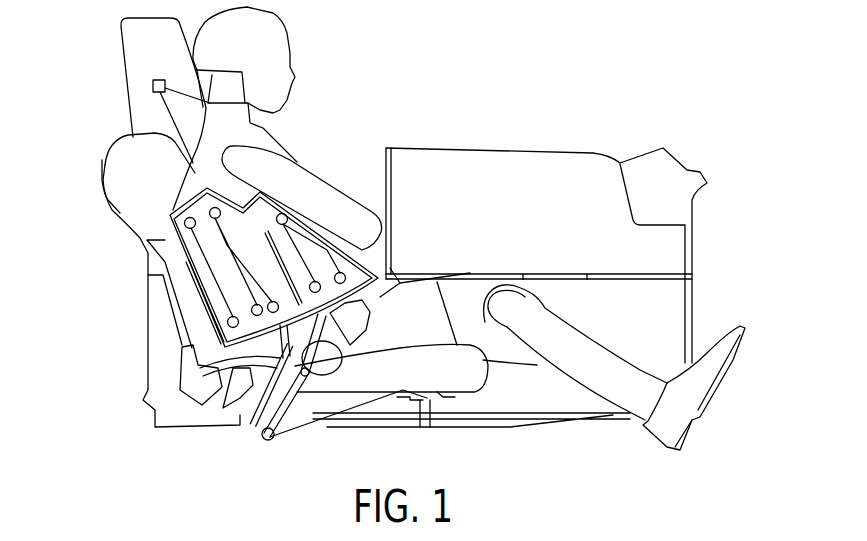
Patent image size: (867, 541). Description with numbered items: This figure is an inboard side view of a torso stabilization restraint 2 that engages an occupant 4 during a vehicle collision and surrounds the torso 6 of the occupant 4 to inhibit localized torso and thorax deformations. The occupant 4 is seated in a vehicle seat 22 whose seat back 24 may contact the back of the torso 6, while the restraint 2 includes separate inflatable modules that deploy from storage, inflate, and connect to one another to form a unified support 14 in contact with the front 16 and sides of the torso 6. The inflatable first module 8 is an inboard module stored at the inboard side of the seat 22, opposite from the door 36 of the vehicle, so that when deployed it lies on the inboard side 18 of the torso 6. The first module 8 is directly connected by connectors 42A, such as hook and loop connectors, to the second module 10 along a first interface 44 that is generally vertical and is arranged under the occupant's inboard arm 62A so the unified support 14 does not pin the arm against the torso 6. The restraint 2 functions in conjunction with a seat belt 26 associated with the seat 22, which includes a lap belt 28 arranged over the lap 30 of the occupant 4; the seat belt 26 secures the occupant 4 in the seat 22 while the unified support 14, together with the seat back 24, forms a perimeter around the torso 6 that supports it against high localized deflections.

The torso stabilization restraint 2 is at (100, 139).
The occupant 4 is at (263, 129).
The torso 6 is at (193, 160).
The first module 8 is at (203, 275).
The second module 10 is at (367, 264).
The unified support 14 is at (356, 332).
The front of the torso 16 is at (298, 157).
The inboard side of the torso 18 is at (208, 222).
The vehicle seat 22 is at (337, 388).
The seat back 24 is at (133, 190).
The seat belt 26 is at (262, 430).
The lap belt 28 is at (200, 410).
The lap 30 is at (408, 290).
The door 36 is at (663, 252).
The connectors 42A is at (290, 313).
The first interface 44 is at (187, 363).
The inboard arm 62A is at (373, 174).